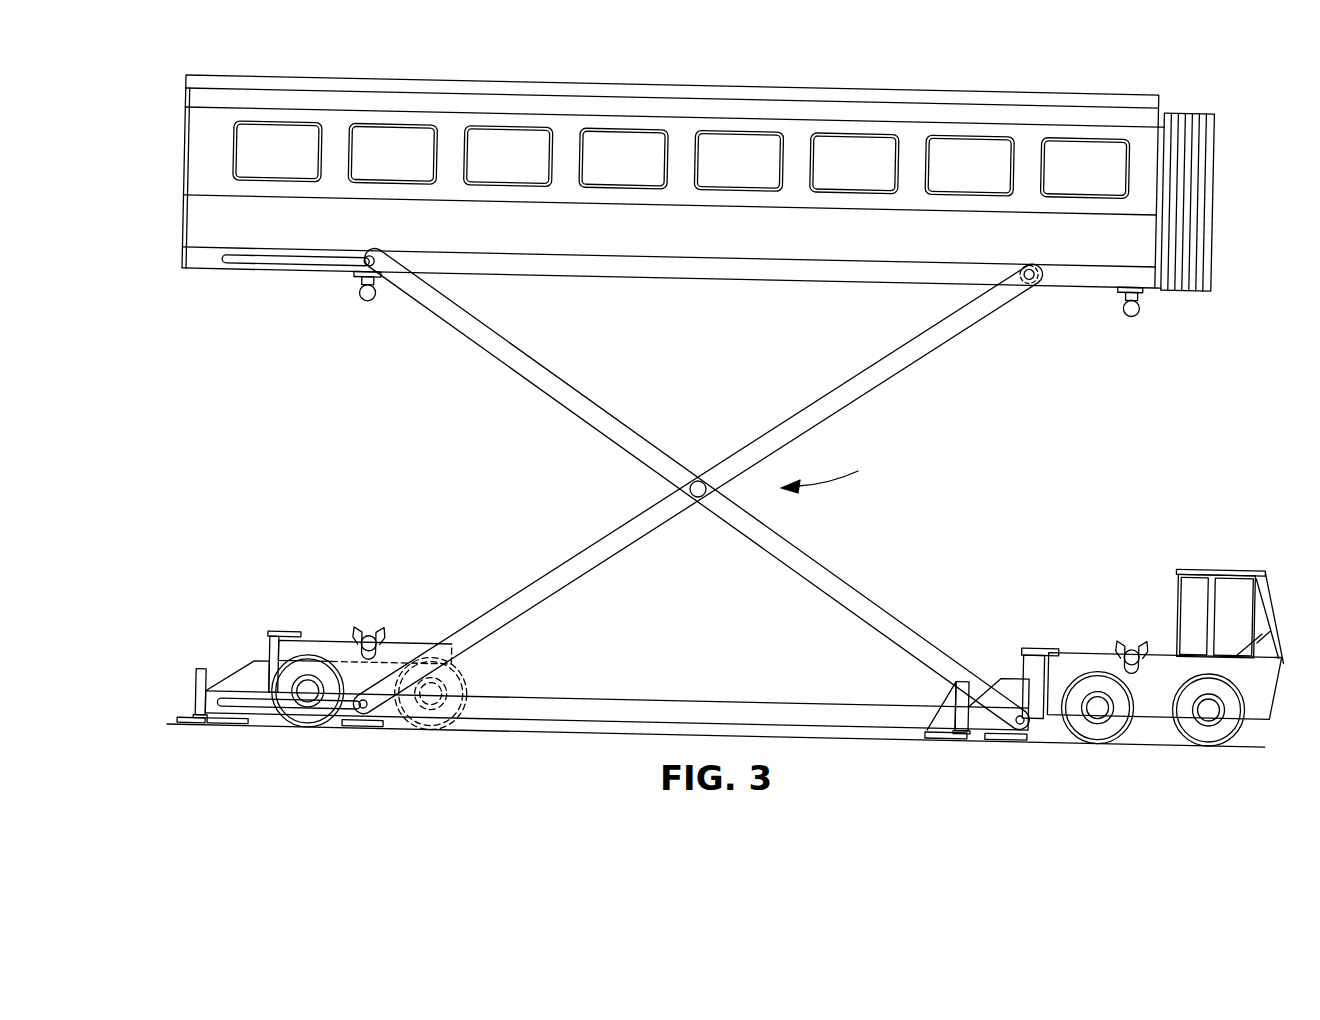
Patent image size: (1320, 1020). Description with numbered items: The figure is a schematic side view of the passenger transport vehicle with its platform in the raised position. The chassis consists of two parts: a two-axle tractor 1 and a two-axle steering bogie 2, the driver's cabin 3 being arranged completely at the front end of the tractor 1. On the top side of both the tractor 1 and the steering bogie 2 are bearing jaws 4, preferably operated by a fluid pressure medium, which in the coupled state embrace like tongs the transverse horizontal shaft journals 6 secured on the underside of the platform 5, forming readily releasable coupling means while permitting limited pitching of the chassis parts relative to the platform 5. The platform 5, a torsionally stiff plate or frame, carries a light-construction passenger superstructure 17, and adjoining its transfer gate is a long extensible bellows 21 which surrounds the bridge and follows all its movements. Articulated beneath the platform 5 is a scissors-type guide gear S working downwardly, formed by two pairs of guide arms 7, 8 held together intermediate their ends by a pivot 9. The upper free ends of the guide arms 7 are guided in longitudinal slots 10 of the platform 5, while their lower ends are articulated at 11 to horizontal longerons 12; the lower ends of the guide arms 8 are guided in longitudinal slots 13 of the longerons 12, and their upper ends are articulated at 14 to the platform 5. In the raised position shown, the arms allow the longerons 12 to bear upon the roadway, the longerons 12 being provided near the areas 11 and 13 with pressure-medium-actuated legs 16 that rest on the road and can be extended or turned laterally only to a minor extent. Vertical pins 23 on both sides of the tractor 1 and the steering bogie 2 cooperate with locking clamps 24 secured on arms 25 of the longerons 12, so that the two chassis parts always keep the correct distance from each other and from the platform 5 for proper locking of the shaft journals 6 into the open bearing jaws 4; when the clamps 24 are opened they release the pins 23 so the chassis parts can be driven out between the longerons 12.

The tractor 1 is at (1263, 690).
The steering bogie 2 is at (400, 650).
The driver's cabin 3 is at (1230, 600).
The bearing jaws 4 is at (360, 630).
The platform 5 is at (641, 268).
The shaft journals 6 is at (366, 297).
The guide arms 7 is at (847, 586).
The guide arms 8 is at (918, 358).
The pivot 9 is at (696, 498).
The longitudinal slots 10 is at (283, 262).
The articulation 11 is at (1028, 727).
The longerons 12 is at (528, 712).
The longitudinal slots 13 is at (345, 710).
The articulation 14 is at (1033, 283).
The legs 16 is at (232, 721).
The passenger superstructure 17 is at (805, 108).
The extensible bellows 21 is at (1193, 217).
The vertical pins 23 is at (264, 660).
The locking clamps 24 is at (266, 668).
The arms 25 is at (242, 683).
The guide gear S is at (833, 474).